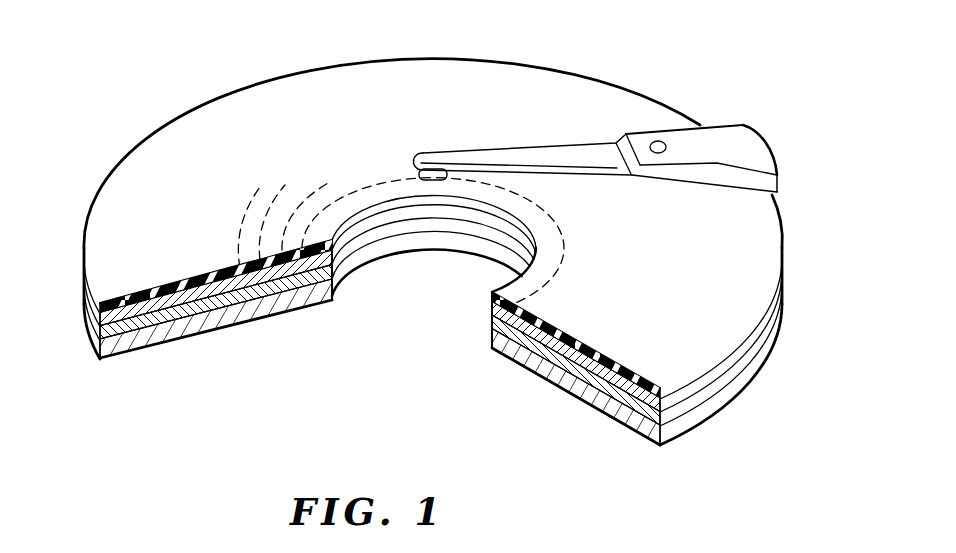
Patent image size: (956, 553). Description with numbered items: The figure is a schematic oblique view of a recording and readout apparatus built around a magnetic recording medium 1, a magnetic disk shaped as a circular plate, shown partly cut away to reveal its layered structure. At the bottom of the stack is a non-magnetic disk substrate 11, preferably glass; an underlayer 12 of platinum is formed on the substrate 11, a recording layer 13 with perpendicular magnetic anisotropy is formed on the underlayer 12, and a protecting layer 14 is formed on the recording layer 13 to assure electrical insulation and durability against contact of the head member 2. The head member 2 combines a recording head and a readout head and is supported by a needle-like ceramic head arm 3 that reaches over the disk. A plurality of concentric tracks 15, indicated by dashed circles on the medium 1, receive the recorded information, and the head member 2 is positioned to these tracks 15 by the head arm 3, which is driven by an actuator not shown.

The magnetic recording medium 1 is at (273, 77).
The head member 2 is at (430, 181).
The head arm 3 is at (533, 148).
The non-magnetic disk substrate 11 is at (196, 326).
The underlayer 12 is at (118, 328).
The recording layer 13 is at (87, 316).
The protecting layer 14 is at (146, 290).
The concentric tracks 15 is at (383, 179).